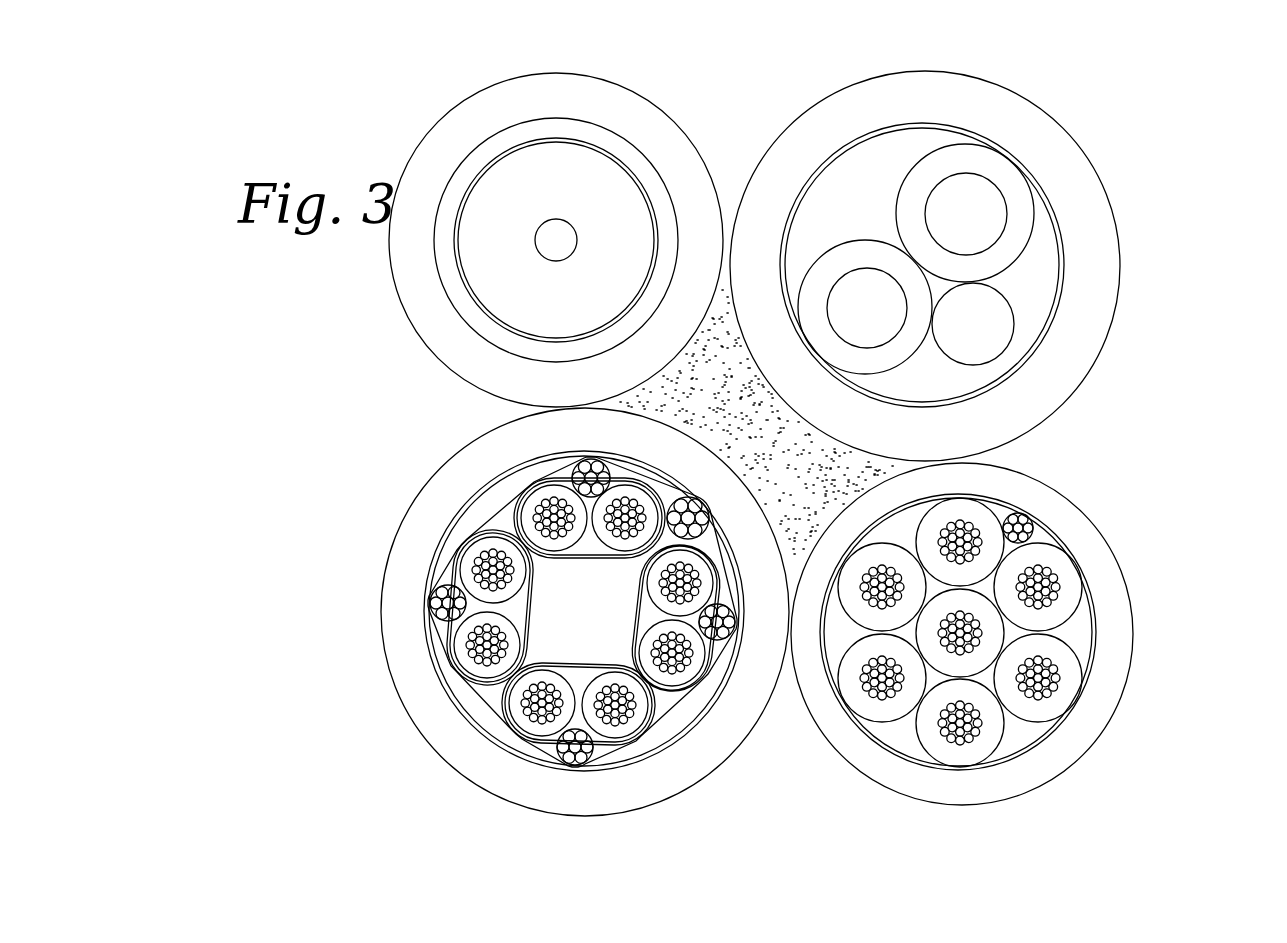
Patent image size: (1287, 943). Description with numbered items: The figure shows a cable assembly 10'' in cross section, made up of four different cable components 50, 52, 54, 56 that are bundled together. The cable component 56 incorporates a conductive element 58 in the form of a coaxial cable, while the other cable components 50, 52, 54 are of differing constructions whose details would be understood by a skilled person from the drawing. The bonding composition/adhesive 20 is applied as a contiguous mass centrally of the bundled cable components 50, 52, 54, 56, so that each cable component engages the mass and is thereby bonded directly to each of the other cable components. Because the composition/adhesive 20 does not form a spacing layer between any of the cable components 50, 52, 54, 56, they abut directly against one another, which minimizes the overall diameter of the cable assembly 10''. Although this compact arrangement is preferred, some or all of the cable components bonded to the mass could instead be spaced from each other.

The cable assembly 10'' is at (761, 434).
The bonding composition/adhesive 20 is at (693, 407).
The cable component 50 is at (1120, 253).
The cable component 52 is at (1085, 532).
The cable component 54 is at (732, 737).
The cable component 56 is at (417, 333).
The conductive element 58 is at (625, 140).